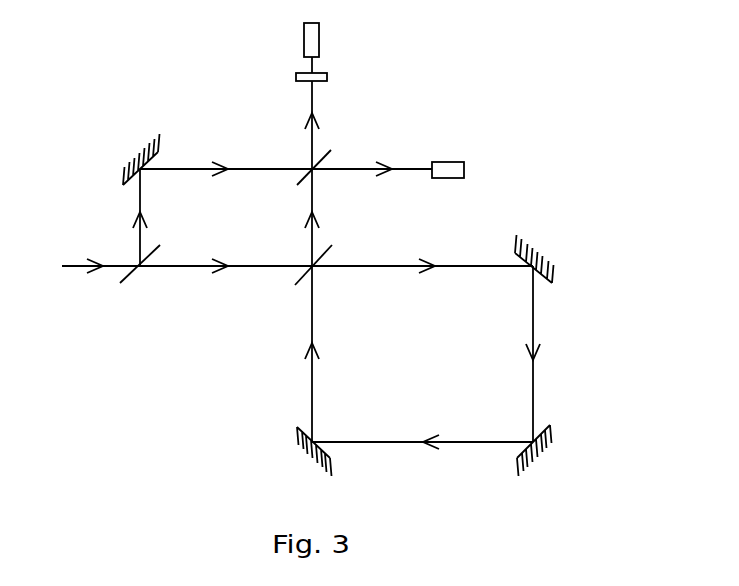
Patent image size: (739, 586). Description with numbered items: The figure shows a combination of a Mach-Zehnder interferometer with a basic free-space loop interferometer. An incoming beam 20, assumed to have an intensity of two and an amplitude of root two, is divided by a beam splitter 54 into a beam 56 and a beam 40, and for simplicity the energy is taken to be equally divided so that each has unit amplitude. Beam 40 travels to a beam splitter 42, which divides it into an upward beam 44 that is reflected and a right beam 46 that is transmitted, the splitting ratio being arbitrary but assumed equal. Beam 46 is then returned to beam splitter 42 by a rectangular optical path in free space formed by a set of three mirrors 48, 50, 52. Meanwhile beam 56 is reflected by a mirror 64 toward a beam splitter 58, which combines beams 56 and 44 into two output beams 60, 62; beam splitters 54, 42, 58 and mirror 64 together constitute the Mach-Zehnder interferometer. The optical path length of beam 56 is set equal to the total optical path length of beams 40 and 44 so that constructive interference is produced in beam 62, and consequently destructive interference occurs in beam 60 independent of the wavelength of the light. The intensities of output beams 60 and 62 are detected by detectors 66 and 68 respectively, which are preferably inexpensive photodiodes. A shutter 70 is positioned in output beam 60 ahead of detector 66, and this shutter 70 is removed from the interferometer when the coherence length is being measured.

The incoming beam 20 is at (82, 264).
The incoming light beam 40 is at (190, 264).
The beam splitter 42 is at (295, 287).
The upward beam 44 is at (312, 241).
The right beam 46 is at (368, 264).
The mirror 48 is at (544, 253).
The mirror 50 is at (544, 452).
The mirror 52 is at (301, 450).
The beam splitter 54 is at (128, 284).
The beam 56 is at (139, 193).
The beam splitter 58 is at (297, 186).
The output beam 60 is at (312, 138).
The output beam 62 is at (364, 166).
The mirror 64 is at (137, 153).
The detector 66 is at (320, 37).
The detector 68 is at (449, 162).
The shutter 70 is at (327, 79).